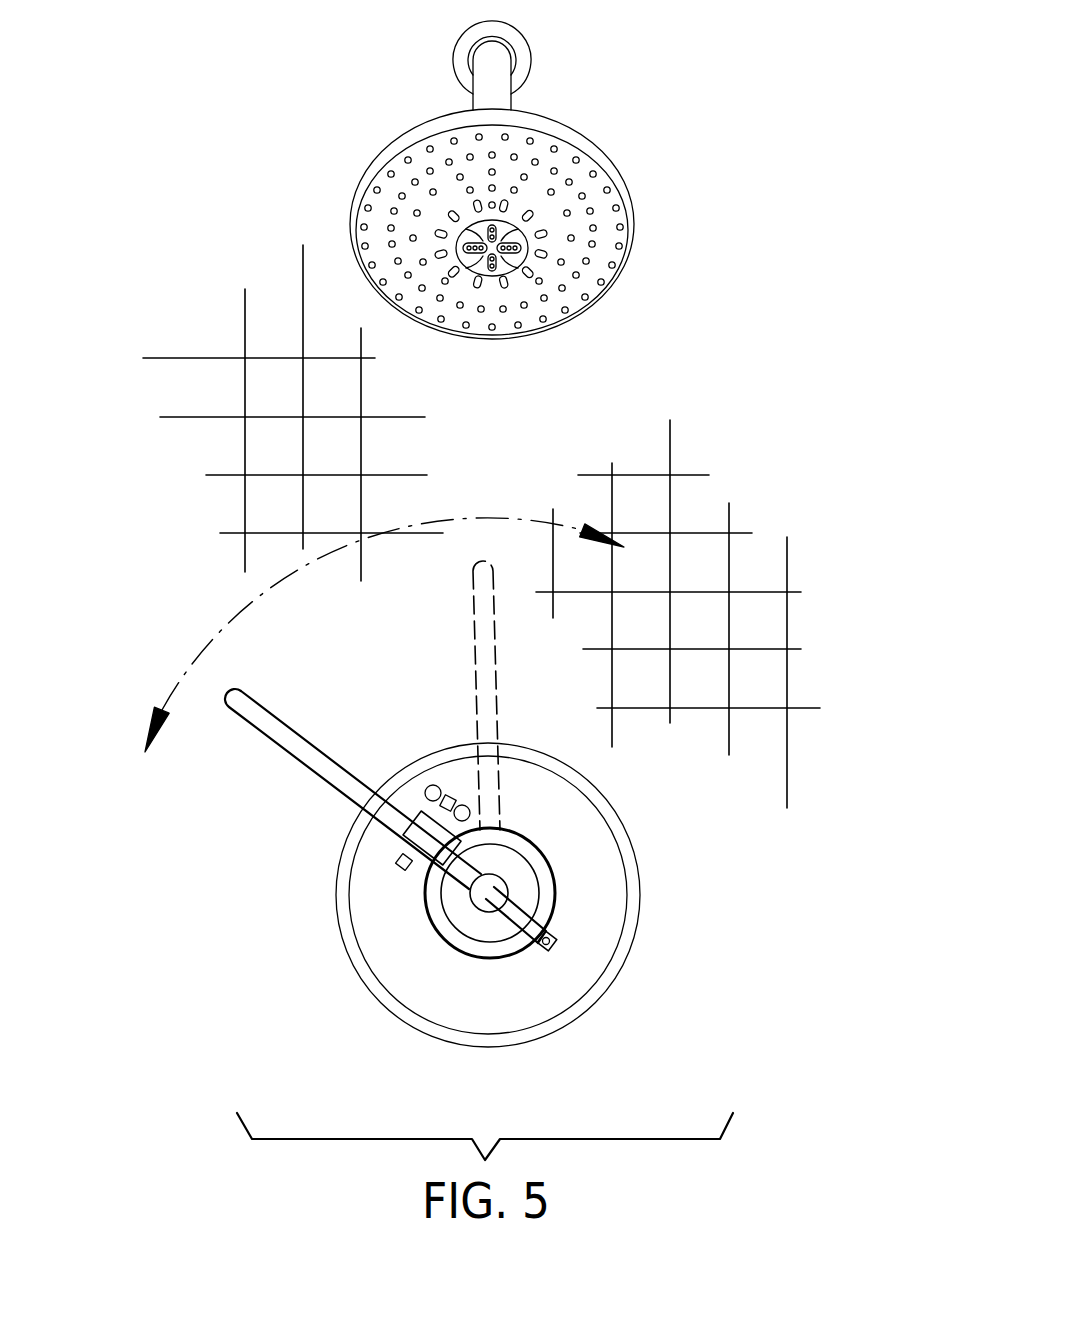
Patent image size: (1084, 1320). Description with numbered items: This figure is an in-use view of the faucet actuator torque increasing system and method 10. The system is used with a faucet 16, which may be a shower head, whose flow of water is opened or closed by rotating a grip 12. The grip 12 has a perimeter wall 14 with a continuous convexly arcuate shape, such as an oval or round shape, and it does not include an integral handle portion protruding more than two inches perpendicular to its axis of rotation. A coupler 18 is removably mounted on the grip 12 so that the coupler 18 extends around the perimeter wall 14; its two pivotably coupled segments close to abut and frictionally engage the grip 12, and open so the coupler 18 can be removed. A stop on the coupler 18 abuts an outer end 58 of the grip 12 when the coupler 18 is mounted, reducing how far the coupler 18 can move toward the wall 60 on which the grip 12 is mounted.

The faucet actuator torque increasing system and method 10 is at (133, 374).
The grip 12 is at (447, 900).
The perimeter wall 14 is at (477, 943).
The faucet 16 is at (547, 208).
The coupler 18 is at (572, 880).
The outer end 58 is at (453, 840).
The wall 60 is at (690, 625).